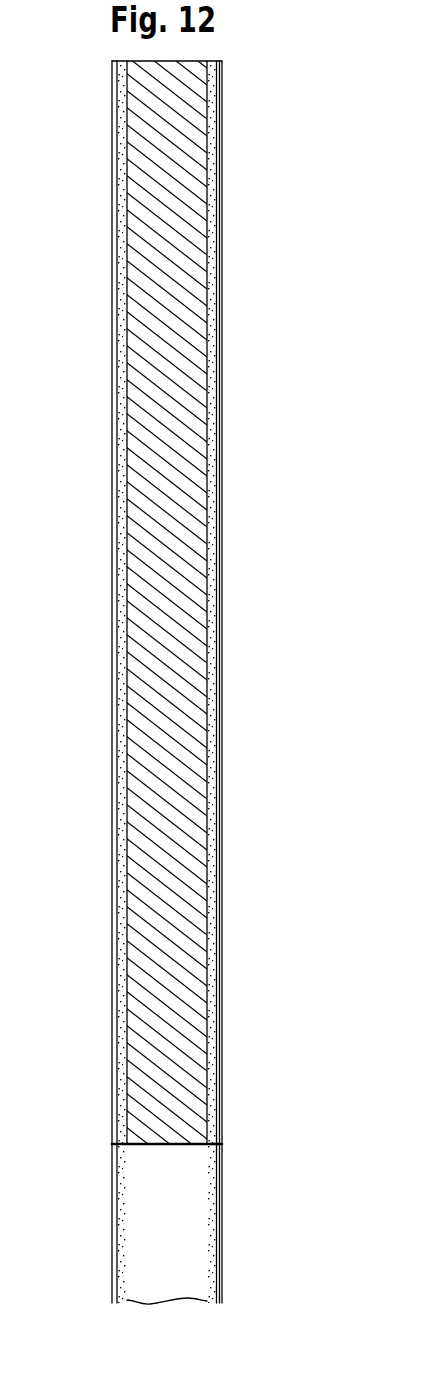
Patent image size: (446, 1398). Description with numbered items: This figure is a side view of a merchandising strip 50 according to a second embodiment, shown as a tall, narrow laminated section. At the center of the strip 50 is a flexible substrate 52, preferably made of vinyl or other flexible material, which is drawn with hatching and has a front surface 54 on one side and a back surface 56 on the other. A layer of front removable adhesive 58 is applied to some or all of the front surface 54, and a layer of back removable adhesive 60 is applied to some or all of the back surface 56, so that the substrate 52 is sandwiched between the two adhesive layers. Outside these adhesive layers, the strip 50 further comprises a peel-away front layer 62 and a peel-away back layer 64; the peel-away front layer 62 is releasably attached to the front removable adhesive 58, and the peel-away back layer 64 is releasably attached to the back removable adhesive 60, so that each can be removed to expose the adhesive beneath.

The merchandising strip 50 is at (80, 183).
The flexible substrate 52 is at (185, 295).
The front surface 54 is at (122, 382).
The back surface 56 is at (208, 411).
The front removable adhesive 58 is at (122, 500).
The back removable adhesive 60 is at (213, 541).
The peel-away front layer 62 is at (112, 607).
The peel-away back layer 64 is at (224, 663).